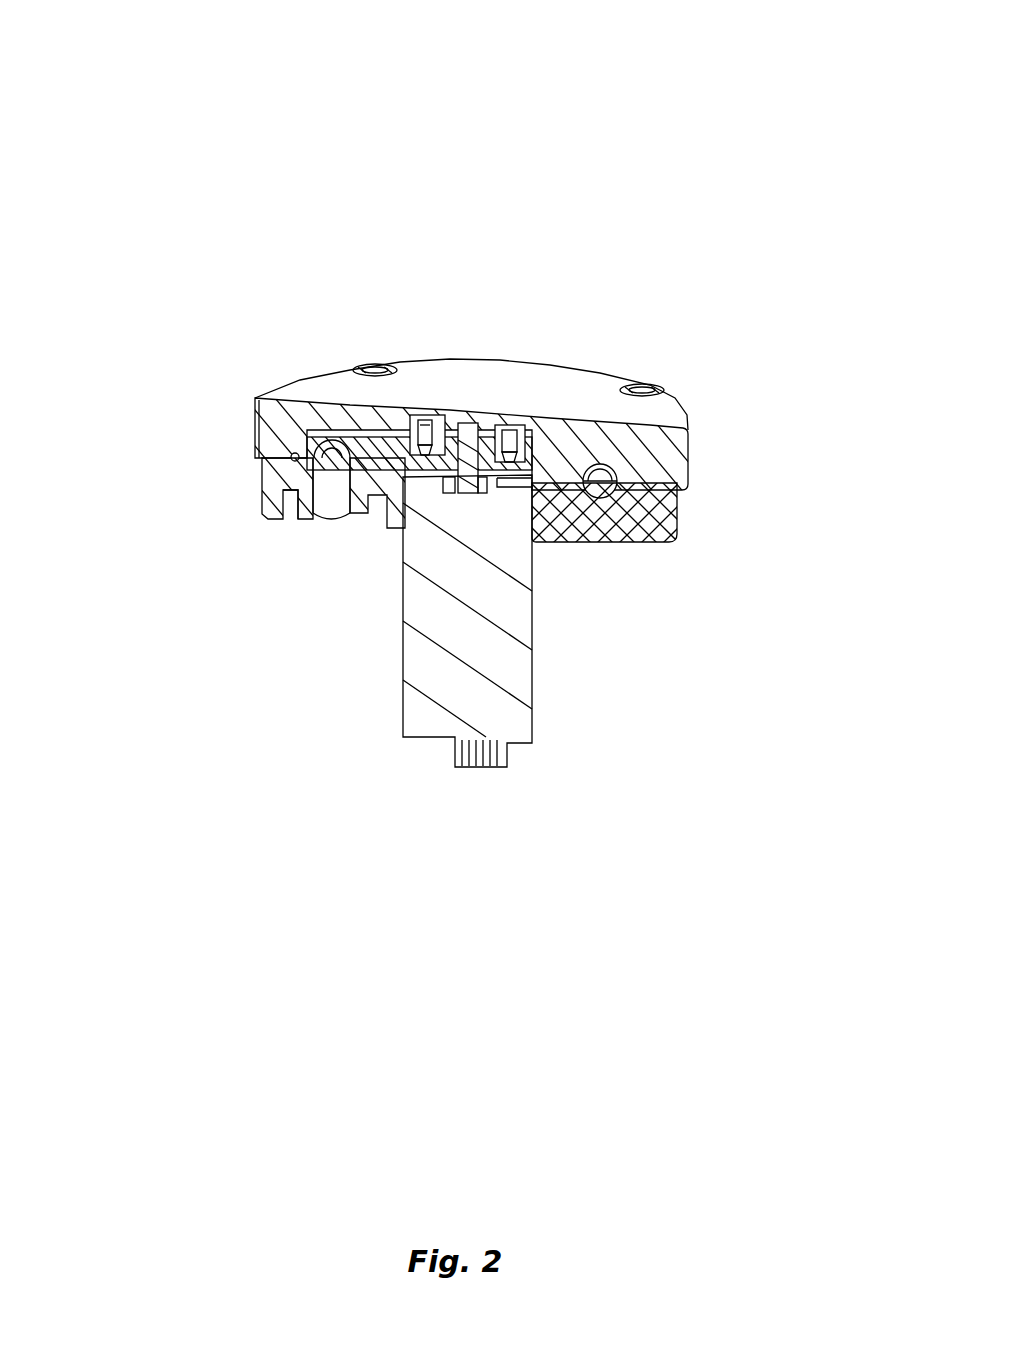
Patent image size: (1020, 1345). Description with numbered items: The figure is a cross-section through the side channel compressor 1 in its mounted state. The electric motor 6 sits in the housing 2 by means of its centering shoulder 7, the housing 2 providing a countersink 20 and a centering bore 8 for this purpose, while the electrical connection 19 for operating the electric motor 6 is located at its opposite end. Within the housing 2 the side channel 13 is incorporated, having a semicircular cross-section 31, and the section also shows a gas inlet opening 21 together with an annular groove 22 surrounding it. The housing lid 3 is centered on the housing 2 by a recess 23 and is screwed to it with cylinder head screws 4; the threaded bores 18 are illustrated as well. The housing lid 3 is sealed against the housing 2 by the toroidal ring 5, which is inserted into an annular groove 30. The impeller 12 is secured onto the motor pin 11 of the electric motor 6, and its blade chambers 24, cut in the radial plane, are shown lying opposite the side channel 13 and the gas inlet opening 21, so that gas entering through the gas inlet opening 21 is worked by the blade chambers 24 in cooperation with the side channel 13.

The side channel compressor 1 is at (717, 493).
The housing 2 is at (560, 522).
The housing lid 3 is at (283, 417).
The cylinder head screws 4 is at (376, 372).
The toroidal ring 5 is at (292, 456).
The electric motor 6 is at (458, 680).
The centering shoulder 7 is at (497, 482).
The centering bore 8 is at (440, 477).
The motor pin 11 is at (469, 497).
The impeller 12 is at (355, 443).
The side channel 13 is at (599, 490).
The threaded bores 18 is at (425, 440).
The electrical connection 19 is at (463, 437).
The countersink 20 is at (398, 518).
The gas inlet opening 21 is at (337, 492).
The annular groove 22 is at (295, 498).
The recess 23 is at (262, 462).
The blade chambers 24 is at (597, 466).
The annular groove 30 is at (618, 478).
The semicircular cross-section 31 is at (673, 534).